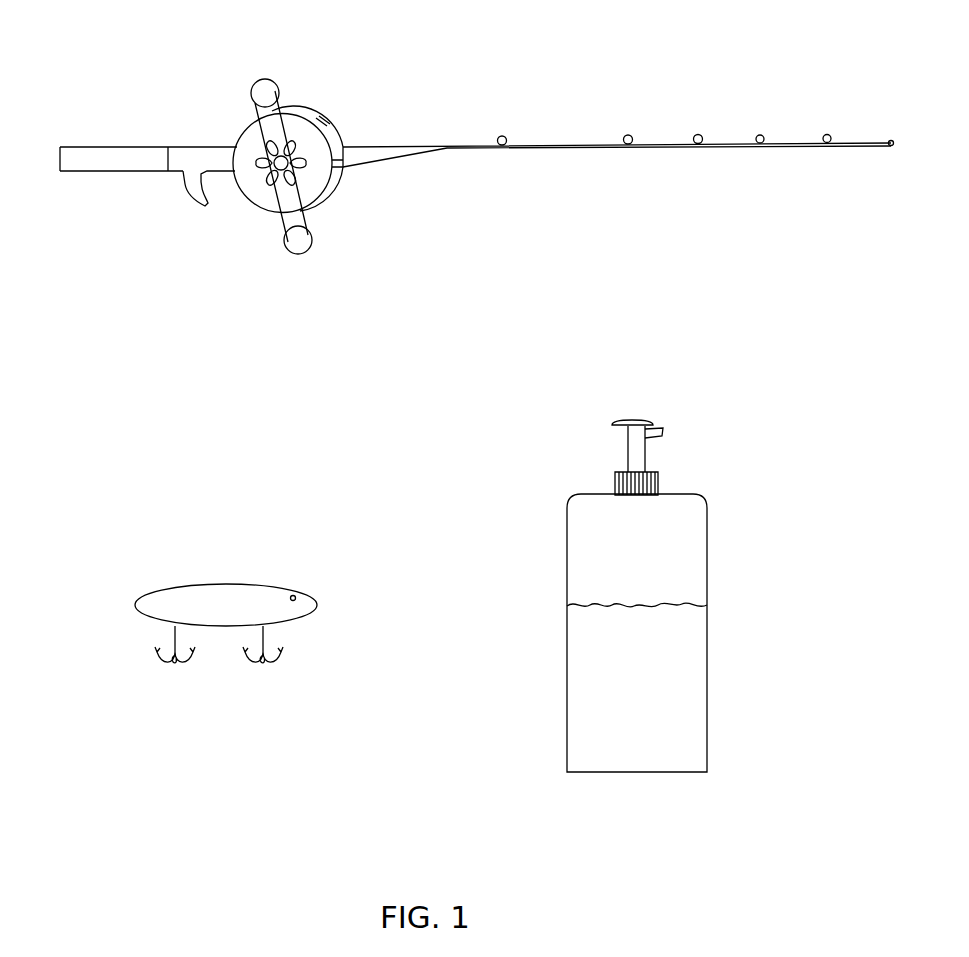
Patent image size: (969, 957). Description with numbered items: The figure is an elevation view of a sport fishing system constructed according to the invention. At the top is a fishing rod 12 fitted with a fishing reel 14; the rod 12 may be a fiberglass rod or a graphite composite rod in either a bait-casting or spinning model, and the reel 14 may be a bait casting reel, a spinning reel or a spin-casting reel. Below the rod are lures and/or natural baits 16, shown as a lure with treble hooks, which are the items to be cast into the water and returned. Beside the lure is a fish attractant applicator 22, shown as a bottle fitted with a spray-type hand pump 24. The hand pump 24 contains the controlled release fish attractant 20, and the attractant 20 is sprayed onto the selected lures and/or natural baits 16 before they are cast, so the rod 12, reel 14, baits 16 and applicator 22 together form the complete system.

The fishing rod 12 is at (484, 146).
The fishing reel 14 is at (311, 106).
The lures and/or natural baits 16 is at (208, 581).
The controlled release fish attractant 20 is at (667, 682).
The fish attractant applicator 22 is at (674, 565).
The spray-type hand pump 24 is at (642, 420).